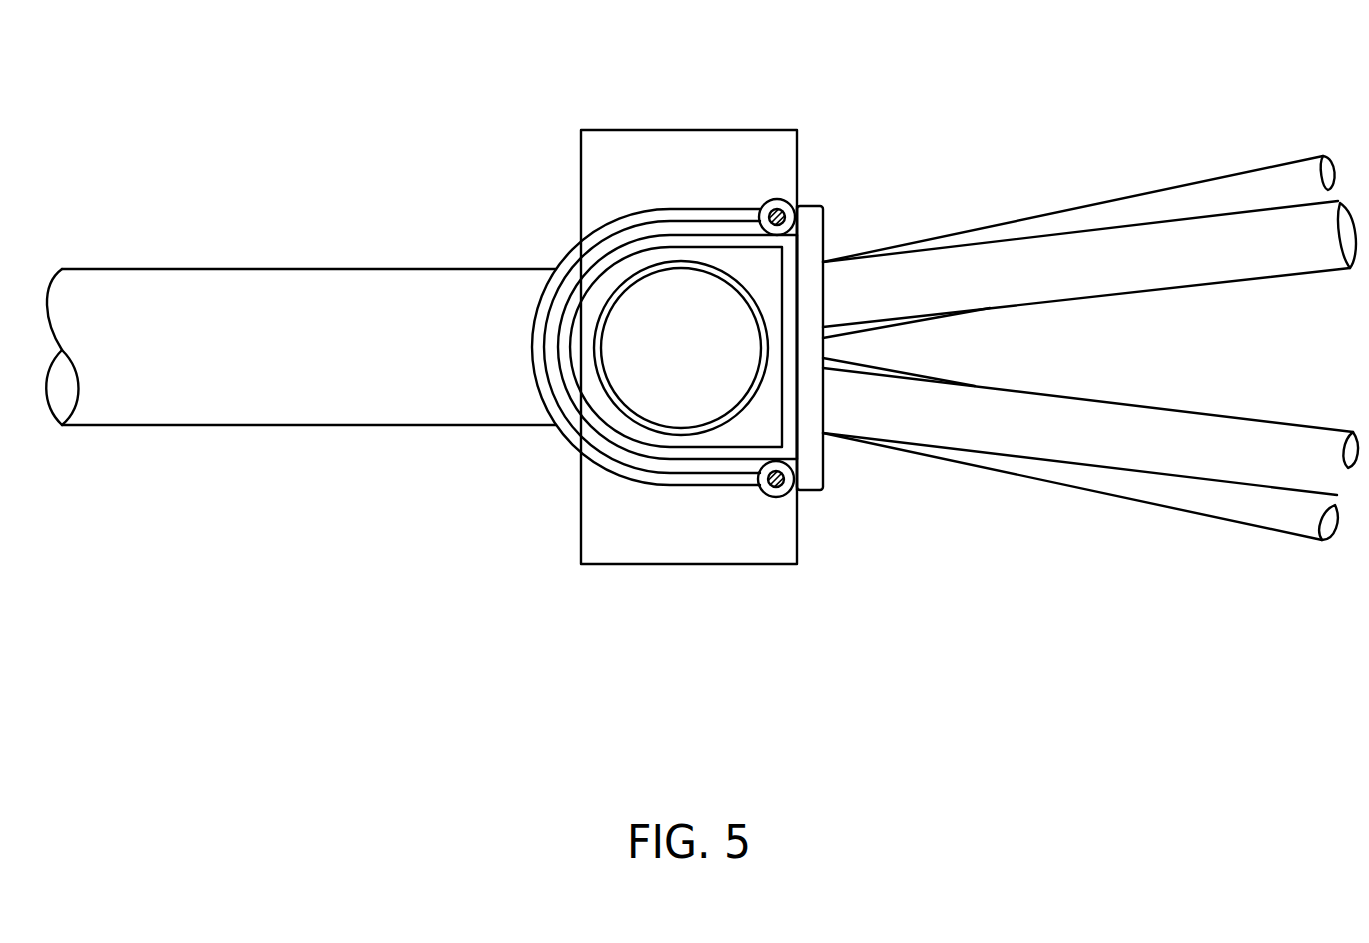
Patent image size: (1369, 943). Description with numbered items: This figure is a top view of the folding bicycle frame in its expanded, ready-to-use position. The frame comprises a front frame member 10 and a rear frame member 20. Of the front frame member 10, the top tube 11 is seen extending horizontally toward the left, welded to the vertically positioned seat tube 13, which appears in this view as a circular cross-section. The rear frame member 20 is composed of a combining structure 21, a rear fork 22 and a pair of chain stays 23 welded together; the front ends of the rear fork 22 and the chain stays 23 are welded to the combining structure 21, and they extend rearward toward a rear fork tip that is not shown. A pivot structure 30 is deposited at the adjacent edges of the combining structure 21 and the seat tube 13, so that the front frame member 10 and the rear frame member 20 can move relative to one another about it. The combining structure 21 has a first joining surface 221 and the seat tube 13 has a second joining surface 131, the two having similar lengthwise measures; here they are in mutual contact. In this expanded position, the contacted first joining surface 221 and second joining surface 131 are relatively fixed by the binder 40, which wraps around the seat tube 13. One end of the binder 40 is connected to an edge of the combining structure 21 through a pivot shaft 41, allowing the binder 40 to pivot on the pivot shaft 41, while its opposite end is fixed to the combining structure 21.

The front frame member 10 is at (301, 254).
The top tube 11 is at (166, 282).
The seat tube 13 is at (598, 337).
The rear frame member 20 is at (1090, 287).
The combining structure 21 is at (808, 207).
The rear fork 22 is at (1227, 262).
The chain stays 23 is at (1284, 175).
The pivot structure 30 is at (774, 497).
The binder 40 is at (563, 263).
The pivot shaft 41 is at (778, 200).
The second joining surface 131 is at (800, 297).
The first joining surface 221 is at (800, 297).